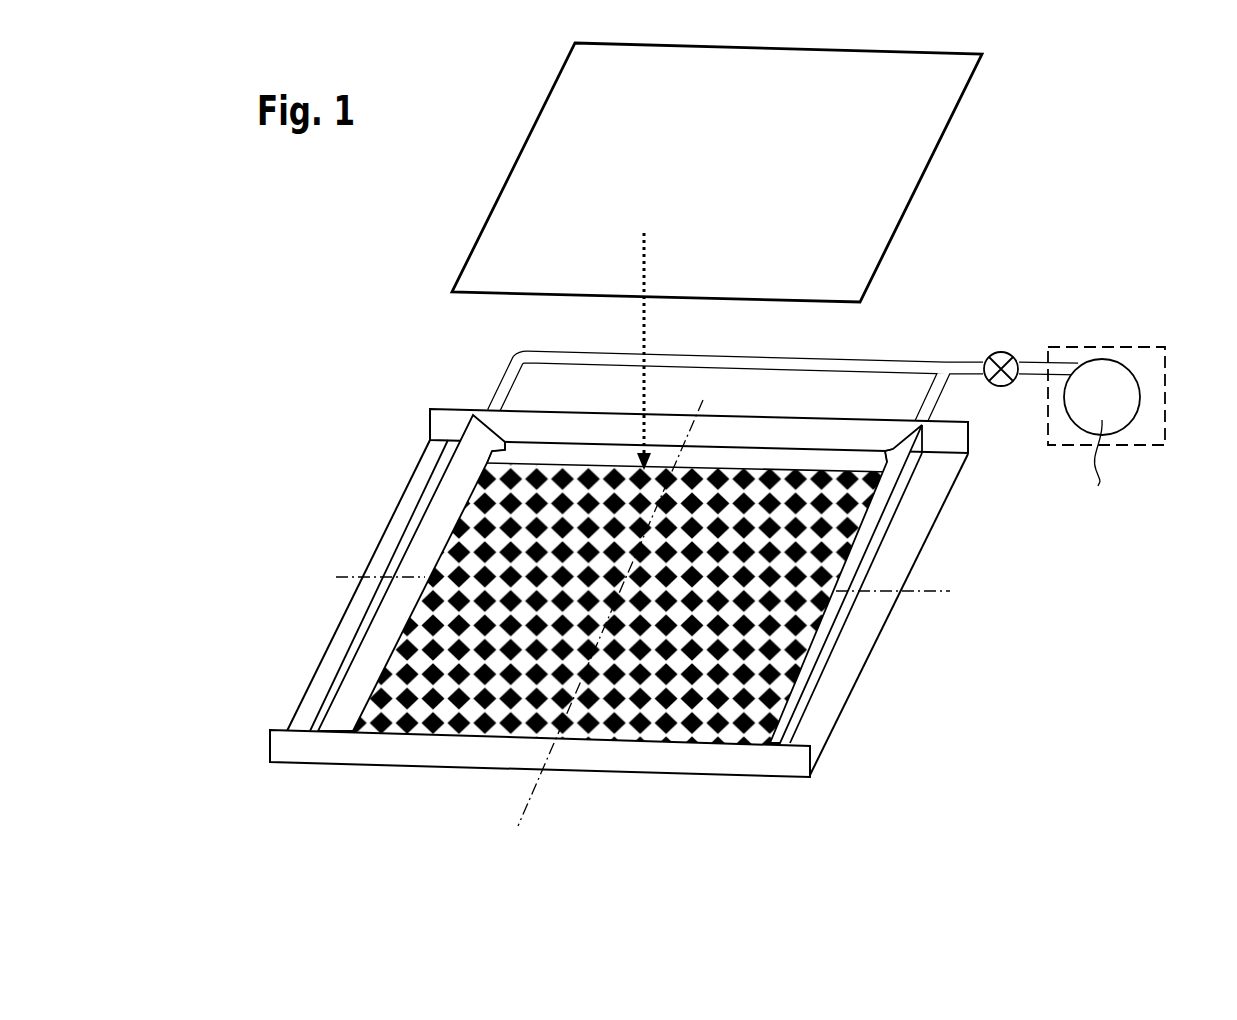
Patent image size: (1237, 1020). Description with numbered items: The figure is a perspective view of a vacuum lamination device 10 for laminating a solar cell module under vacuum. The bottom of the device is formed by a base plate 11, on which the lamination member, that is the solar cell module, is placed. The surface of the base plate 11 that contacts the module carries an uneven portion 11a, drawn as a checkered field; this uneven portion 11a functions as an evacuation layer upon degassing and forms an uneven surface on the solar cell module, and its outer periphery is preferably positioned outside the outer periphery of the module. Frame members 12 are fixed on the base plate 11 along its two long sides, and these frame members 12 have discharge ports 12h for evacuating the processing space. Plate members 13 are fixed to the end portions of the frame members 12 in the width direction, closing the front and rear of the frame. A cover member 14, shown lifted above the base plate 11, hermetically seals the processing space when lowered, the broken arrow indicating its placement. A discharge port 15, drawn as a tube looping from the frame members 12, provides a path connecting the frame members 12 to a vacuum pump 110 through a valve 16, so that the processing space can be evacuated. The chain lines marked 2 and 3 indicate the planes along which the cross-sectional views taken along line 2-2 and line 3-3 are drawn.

The vacuum lamination device 10 is at (1039, 248).
The base plate 11 is at (618, 460).
The uneven portion 11a is at (686, 740).
The frame member 12 is at (439, 507).
The discharge port 12h is at (486, 476).
The plate member 13 is at (435, 430).
The cover member 14 is at (538, 167).
The discharge port 15 is at (897, 364).
The valve 16 is at (1003, 352).
The vacuum pump 110 is at (1112, 347).
The line 2- 2 is at (330, 587).
The line 3- 3 is at (714, 395).